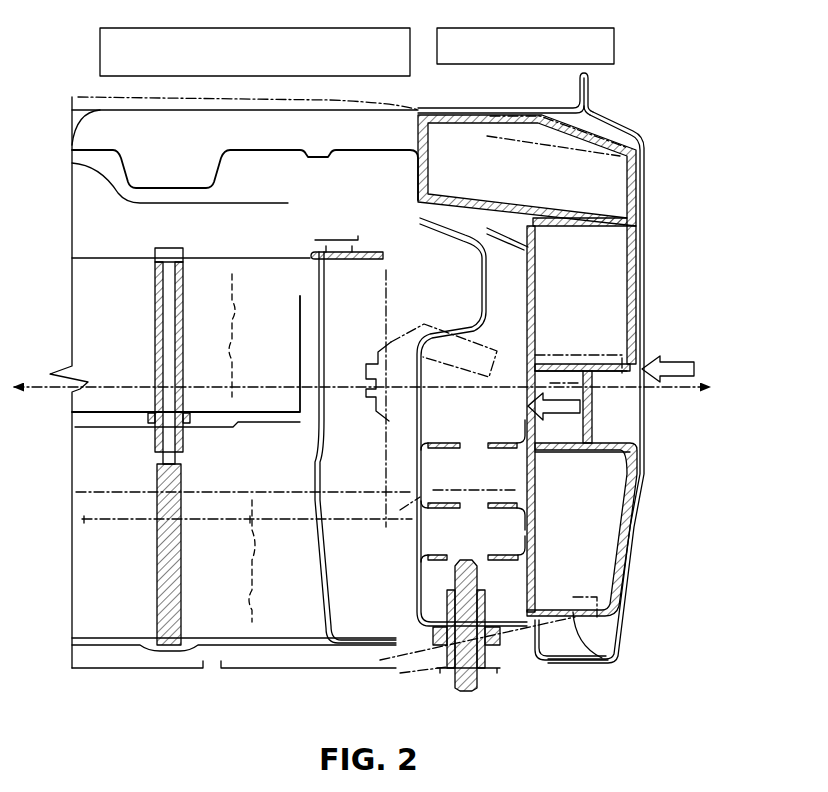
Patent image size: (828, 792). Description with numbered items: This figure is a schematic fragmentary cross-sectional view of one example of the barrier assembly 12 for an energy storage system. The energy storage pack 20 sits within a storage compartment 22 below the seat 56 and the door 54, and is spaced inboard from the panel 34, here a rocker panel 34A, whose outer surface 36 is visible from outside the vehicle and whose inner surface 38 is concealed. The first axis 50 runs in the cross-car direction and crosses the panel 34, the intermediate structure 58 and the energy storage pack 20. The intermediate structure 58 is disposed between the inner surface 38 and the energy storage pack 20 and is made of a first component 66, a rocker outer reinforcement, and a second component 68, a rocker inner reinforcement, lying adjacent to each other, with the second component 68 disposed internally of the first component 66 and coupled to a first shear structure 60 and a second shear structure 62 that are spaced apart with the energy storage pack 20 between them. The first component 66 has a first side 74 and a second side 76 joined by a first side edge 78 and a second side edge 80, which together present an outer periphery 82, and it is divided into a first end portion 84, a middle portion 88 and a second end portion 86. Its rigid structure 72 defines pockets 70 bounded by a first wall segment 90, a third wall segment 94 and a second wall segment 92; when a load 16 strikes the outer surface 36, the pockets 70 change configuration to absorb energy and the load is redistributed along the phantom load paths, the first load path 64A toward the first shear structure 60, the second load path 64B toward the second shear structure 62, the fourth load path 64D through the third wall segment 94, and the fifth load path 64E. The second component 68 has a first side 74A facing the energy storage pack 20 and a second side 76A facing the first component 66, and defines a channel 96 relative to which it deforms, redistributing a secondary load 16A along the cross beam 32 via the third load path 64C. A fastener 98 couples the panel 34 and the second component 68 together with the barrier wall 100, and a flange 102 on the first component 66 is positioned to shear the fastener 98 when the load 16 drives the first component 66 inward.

The barrier assembly 12 is at (730, 48).
The load 16 is at (678, 362).
The secondary load 16A is at (563, 417).
The energy storage pack 20 is at (90, 324).
The storage compartment 22 is at (340, 240).
The cross beam 32 is at (86, 522).
The panel 34 is at (648, 387).
The rocker panel 34A is at (644, 233).
The outer surface 36 is at (649, 431).
The inner surface 38 is at (634, 213).
The first axis 50 is at (40, 392).
The door 54 is at (536, 55).
The seat 56 is at (264, 59).
The intermediate structure 58 is at (641, 529).
The first shear structure 60 is at (78, 97).
The second shear structure 62 is at (118, 670).
The first load path 64A is at (609, 127).
The second load path 64B is at (573, 617).
The third load path 64C is at (433, 488).
The fourth load path 64D is at (582, 352).
The fifth load path 64E is at (436, 327).
The first component 66 is at (641, 529).
The second component 68 is at (640, 491).
The pocket 70 is at (517, 217).
The rigid structure 72 is at (641, 529).
The first side 74 is at (635, 274).
The first side 74A is at (527, 420).
The second side 76 is at (463, 235).
The second side 76A is at (525, 305).
The first side edge 78 is at (480, 120).
The second side edge 80 is at (614, 660).
The outer periphery 82 is at (636, 532).
The first end portion 84 is at (657, 146).
The second end portion 86 is at (696, 602).
The middle portion 88 is at (682, 326).
The first wall segment 90 is at (480, 128).
The second wall segment 92 is at (573, 600).
The third wall segment 94 is at (625, 375).
The channel 96 is at (522, 263).
The fastener 98 is at (449, 688).
The barrier wall 100 is at (420, 396).
The flange 102 is at (622, 608).